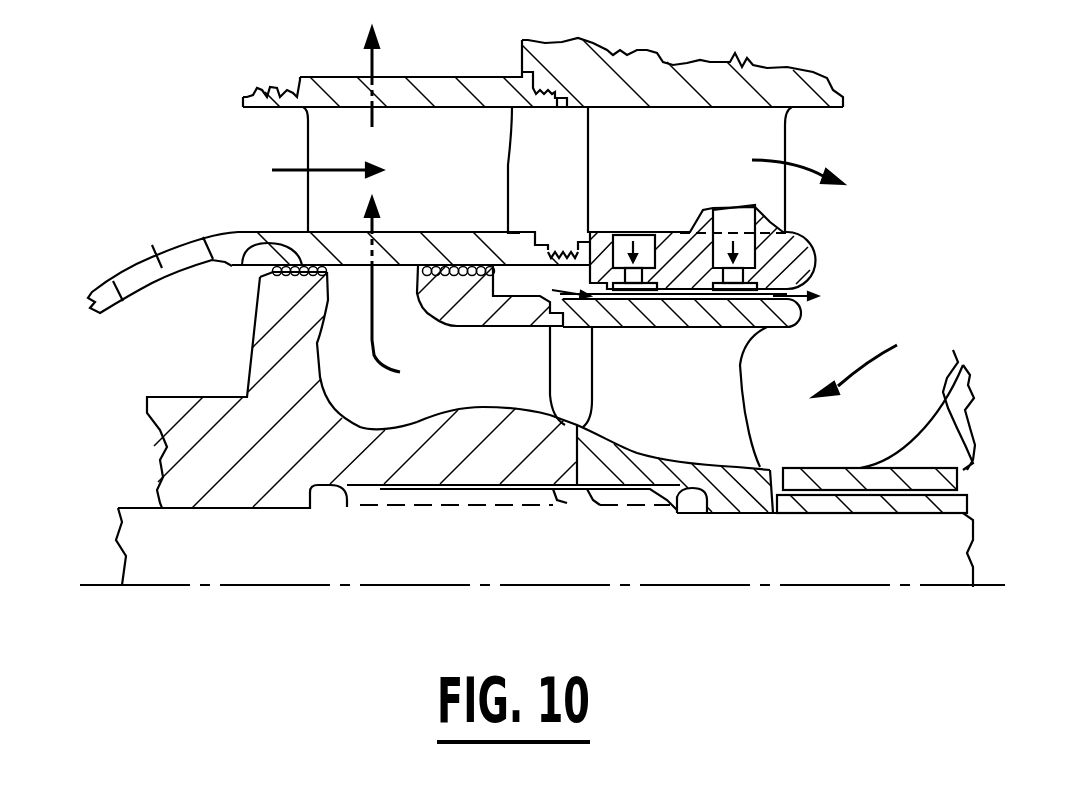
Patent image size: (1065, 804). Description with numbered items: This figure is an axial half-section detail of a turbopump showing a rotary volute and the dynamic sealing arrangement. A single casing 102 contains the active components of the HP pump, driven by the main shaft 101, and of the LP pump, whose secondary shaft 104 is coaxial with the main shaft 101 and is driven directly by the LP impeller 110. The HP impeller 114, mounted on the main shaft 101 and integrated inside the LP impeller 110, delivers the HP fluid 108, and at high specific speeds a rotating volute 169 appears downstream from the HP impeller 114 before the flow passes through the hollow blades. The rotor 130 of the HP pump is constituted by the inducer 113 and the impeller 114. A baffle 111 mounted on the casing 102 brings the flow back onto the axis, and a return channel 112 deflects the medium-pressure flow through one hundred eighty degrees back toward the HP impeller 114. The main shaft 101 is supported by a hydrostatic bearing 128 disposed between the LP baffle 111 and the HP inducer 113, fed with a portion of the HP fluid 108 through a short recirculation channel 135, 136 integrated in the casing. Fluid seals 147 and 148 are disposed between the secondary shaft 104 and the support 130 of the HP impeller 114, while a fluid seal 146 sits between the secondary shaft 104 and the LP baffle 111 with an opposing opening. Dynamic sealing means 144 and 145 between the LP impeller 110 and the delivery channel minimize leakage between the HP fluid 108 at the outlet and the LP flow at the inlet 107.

The main shaft 101 is at (960, 548).
The casing 102 is at (637, 77).
The secondary shaft 104 is at (113, 281).
The inlet 107 is at (280, 170).
The HP fluid 108 is at (370, 57).
The LP impeller 110 is at (430, 123).
The baffle 111 is at (743, 130).
The return channel 112 is at (878, 415).
The inducer 113 is at (660, 435).
The HP impeller 114 is at (497, 395).
The hydrostatic bearing 128 is at (815, 286).
The rotor 130 is at (183, 460).
The recirculation channel 135 is at (625, 230).
The recirculation channel 136 is at (717, 217).
The dynamic sealing means 144 is at (268, 90).
The dynamic sealing means 145 is at (543, 97).
The fluid seal 146 is at (557, 233).
The fluid seal 147 is at (440, 266).
The fluid seal 148 is at (258, 275).
The rotating volute 169 is at (337, 373).